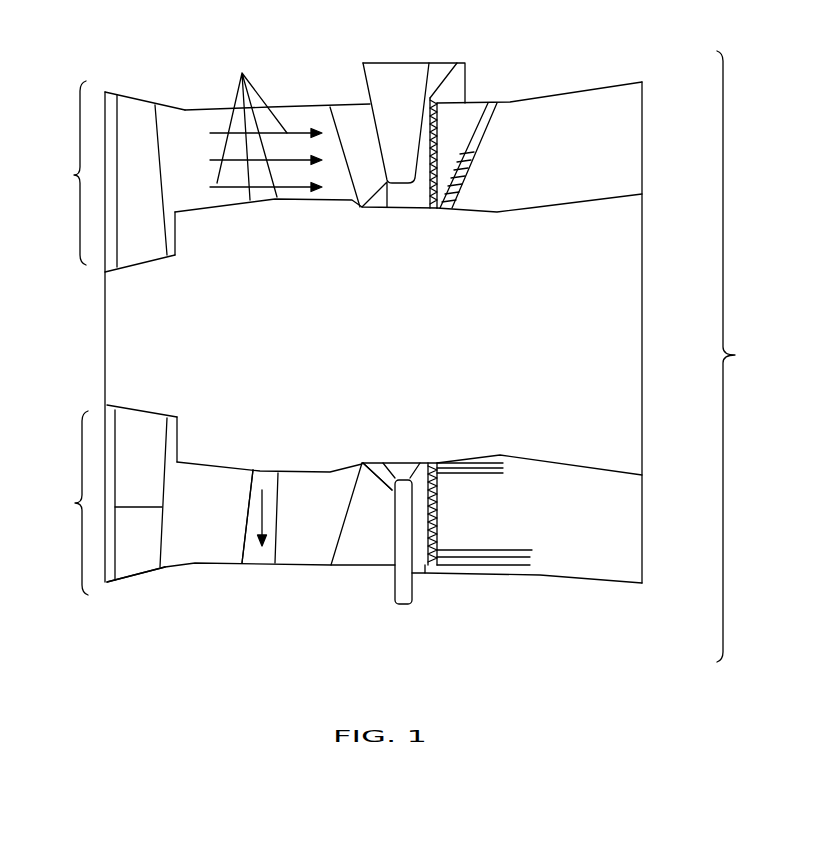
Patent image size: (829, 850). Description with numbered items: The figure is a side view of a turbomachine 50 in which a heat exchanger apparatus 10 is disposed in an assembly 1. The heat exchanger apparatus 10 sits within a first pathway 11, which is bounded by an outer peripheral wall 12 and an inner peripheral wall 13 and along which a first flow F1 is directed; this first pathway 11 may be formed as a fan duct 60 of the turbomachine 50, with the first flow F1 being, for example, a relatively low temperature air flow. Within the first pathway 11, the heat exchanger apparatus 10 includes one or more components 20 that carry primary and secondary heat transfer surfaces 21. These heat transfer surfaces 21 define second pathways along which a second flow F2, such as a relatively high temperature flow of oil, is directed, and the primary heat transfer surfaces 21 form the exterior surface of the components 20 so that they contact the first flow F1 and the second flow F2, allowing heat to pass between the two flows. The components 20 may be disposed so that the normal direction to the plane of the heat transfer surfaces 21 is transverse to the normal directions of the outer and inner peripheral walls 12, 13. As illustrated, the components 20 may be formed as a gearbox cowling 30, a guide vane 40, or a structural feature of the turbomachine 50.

The assembly 1 is at (178, 110).
The heat exchanger apparatus 10 is at (249, 636).
The first pathway 11 is at (105, 338).
The fan duct 60 is at (105, 338).
The outer peripheral wall 12 is at (198, 116).
The inner peripheral wall 13 is at (527, 207).
The component 20 is at (403, 529).
The gearbox cowling 30 is at (410, 500).
The guide vane 40 is at (277, 488).
The heat transfer surface 21 is at (246, 507).
The turbomachine 50 is at (746, 356).
The first flow F1 is at (266, 124).
The second flow F2 is at (257, 526).